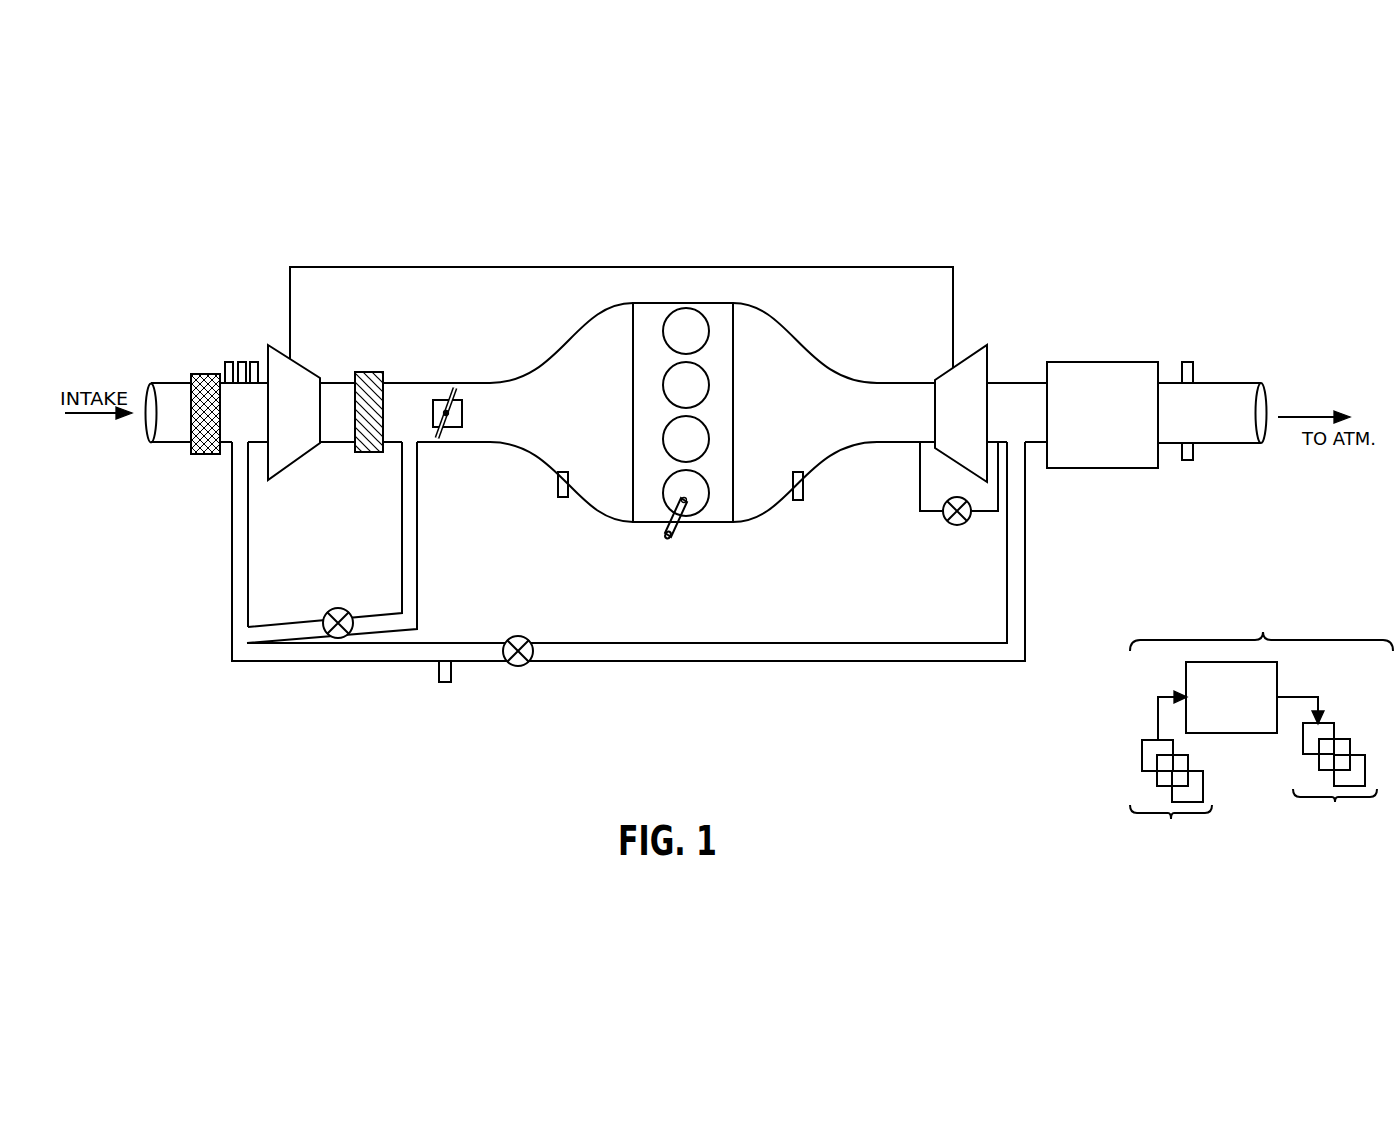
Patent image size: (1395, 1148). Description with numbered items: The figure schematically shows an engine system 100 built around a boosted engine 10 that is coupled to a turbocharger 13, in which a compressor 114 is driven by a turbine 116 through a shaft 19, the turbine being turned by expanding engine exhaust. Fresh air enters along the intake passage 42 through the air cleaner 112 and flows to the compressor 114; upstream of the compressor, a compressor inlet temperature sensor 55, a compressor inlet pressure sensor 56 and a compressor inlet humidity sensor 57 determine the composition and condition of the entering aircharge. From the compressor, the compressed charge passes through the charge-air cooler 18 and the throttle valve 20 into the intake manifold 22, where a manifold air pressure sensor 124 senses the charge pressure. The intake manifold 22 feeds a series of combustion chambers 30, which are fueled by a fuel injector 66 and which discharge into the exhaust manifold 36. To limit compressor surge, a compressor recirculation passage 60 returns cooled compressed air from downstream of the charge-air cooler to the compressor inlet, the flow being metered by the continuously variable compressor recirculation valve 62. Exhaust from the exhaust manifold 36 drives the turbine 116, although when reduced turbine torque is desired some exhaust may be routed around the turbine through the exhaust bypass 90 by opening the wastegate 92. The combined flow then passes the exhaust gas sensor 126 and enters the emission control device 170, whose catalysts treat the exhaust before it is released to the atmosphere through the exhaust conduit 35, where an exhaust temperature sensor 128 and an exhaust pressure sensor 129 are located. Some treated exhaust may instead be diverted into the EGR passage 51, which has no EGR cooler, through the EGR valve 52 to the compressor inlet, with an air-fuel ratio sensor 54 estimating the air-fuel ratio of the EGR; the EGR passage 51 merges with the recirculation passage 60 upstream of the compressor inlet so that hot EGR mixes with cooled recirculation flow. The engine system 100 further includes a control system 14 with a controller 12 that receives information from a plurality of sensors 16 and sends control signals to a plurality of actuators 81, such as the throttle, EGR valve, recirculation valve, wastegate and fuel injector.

The engine system 100 is at (1287, 100).
The turbocharger 13 is at (366, 312).
The shaft 19 is at (850, 268).
The charge-air cooler 18 is at (371, 372).
The compressor inlet temperature sensor 55 is at (229, 361).
The compressor inlet pressure sensor 56 is at (242, 361).
The compressor inlet humidity sensor 57 is at (254, 361).
The air cleaner 112 is at (205, 373).
The intake passage 42 is at (181, 443).
The compressor 114 is at (309, 424).
The throttle valve 20 is at (472, 410).
The intake manifold 22 is at (598, 426).
The combustion chambers 30 is at (705, 324).
The engine 10 is at (734, 396).
The exhaust manifold 36 is at (818, 426).
The turbine 116 is at (976, 424).
The emission control device 170 is at (1090, 363).
The exhaust pressure sensor 129 is at (1190, 362).
The exhaust temperature sensor 128 is at (1188, 460).
The exhaust conduit 35 is at (1240, 382).
The manifold air pressure sensor 124 is at (557, 479).
The exhaust gas sensor 126 is at (804, 478).
The fuel injector 66 is at (679, 527).
The exhaust bypass 90 is at (919, 491).
The wastegate 92 is at (955, 526).
The compressor recirculation passage 60 is at (417, 523).
The compressor recirculation valve 62 is at (330, 609).
The EGR valve 52 is at (528, 637).
The air-fuel ratio sensor 54 is at (445, 682).
The EGR passage 51 is at (815, 662).
The control system 14 is at (1261, 620).
The controller 12 is at (1231, 697).
The sensors 16 is at (1171, 803).
The actuators 81 is at (1335, 786).